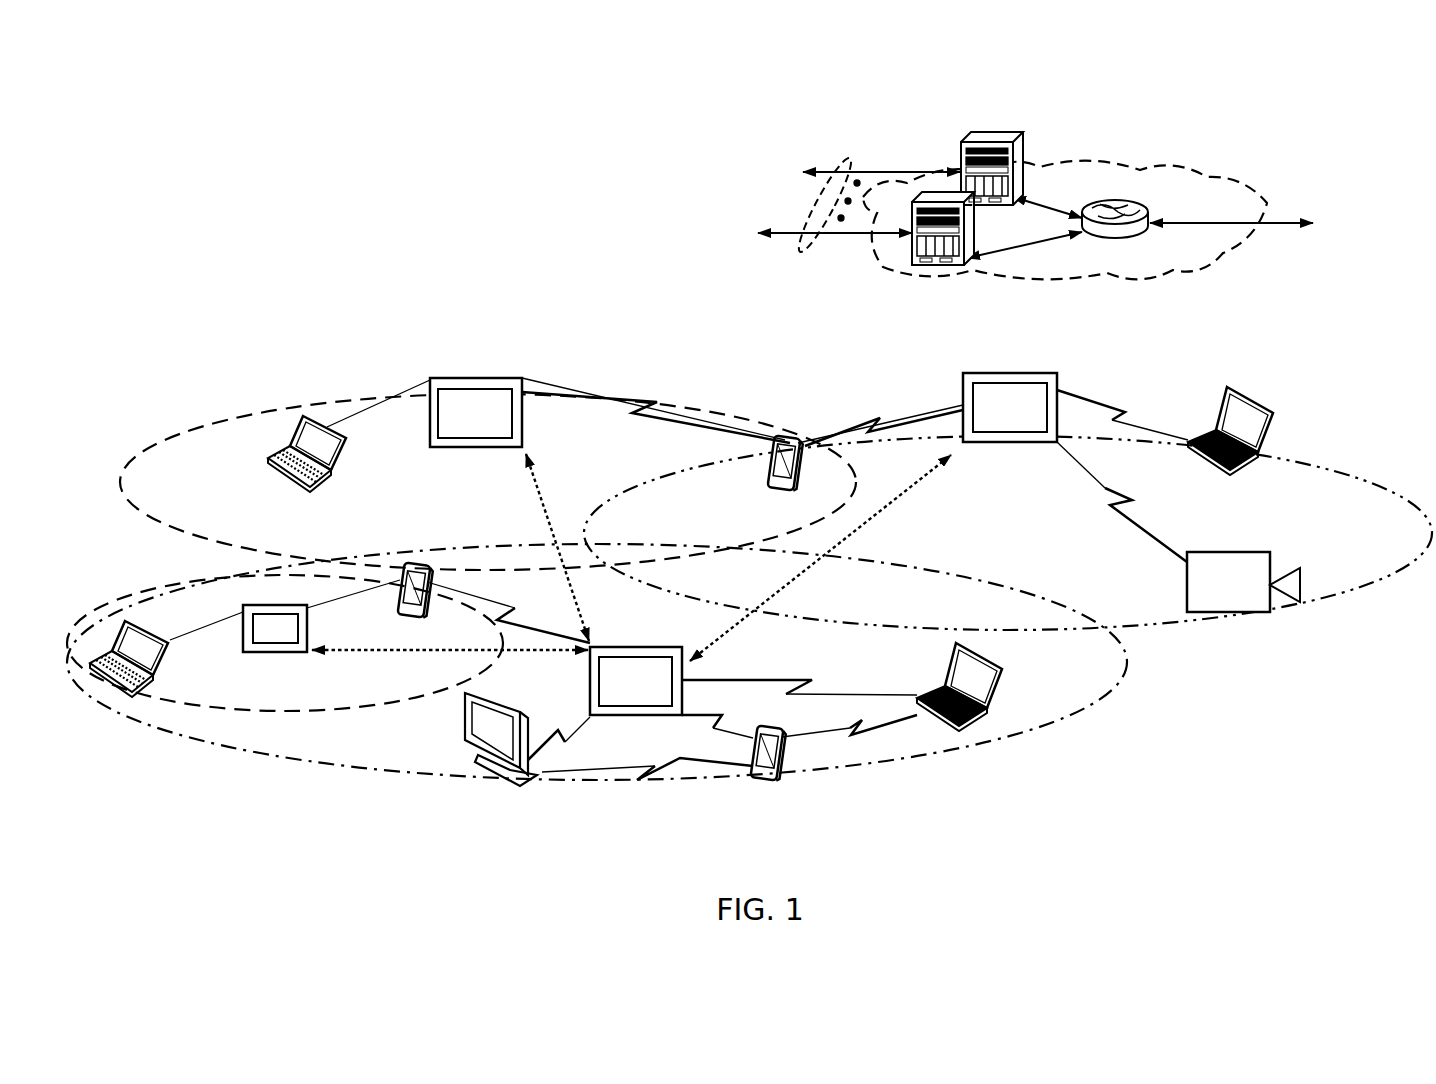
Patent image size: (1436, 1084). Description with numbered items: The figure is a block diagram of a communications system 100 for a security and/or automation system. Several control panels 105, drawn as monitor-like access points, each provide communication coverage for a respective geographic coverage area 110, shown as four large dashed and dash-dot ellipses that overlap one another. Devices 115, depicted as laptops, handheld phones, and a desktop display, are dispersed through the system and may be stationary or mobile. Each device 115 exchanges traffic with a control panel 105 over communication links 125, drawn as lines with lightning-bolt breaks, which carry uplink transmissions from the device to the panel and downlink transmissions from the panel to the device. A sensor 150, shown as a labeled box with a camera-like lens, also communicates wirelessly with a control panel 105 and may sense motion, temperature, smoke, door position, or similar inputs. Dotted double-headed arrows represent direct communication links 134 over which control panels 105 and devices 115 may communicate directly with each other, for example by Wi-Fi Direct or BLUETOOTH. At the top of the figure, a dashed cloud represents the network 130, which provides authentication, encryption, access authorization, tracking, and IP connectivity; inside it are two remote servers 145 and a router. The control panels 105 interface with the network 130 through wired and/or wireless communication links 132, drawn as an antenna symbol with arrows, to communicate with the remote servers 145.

The communications system 100 is at (1306, 830).
The control panel 105 is at (500, 378).
The geographic coverage area 110 is at (180, 530).
The device 115 is at (325, 478).
The communication link 125 is at (376, 405).
The network 130 is at (1150, 275).
The communication link 132 is at (815, 243).
The direct communication link 134 is at (848, 537).
The remote server 145 is at (990, 130).
The sensor 150 is at (1187, 572).